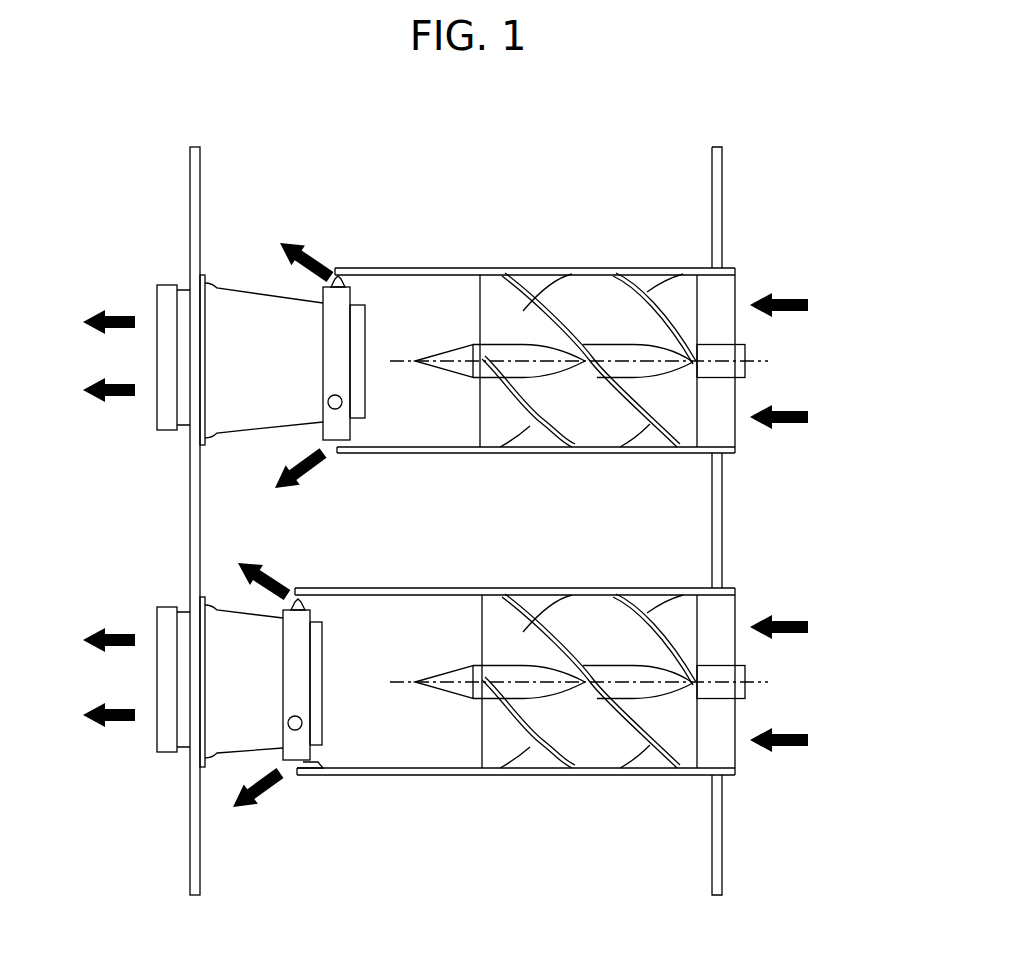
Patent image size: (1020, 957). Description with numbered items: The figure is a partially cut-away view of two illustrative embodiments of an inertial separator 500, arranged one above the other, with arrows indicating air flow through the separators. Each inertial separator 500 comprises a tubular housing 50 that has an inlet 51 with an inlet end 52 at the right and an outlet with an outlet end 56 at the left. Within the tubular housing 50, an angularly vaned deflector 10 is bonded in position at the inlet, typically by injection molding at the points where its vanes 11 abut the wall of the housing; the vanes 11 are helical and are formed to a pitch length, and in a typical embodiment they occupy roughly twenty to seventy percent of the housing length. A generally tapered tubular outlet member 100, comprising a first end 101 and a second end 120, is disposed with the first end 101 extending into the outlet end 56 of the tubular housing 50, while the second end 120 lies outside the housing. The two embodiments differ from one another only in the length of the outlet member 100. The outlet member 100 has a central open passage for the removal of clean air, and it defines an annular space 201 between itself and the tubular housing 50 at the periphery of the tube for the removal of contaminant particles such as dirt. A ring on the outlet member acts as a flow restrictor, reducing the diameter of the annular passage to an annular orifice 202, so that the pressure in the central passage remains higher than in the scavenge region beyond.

The inertial separator 500 is at (470, 238).
The angularly vaned deflector 10 is at (700, 295).
The tubular housing 50 is at (538, 268).
The vanes 11 is at (615, 625).
The inlet 51 is at (748, 598).
The inlet end 52 is at (733, 590).
The outlet end 56 is at (307, 597).
The outlet member 100 is at (223, 607).
The first end 101 is at (322, 707).
The second end 120 is at (160, 292).
The annular space 201 is at (310, 598).
The annular orifice 202 is at (303, 763).